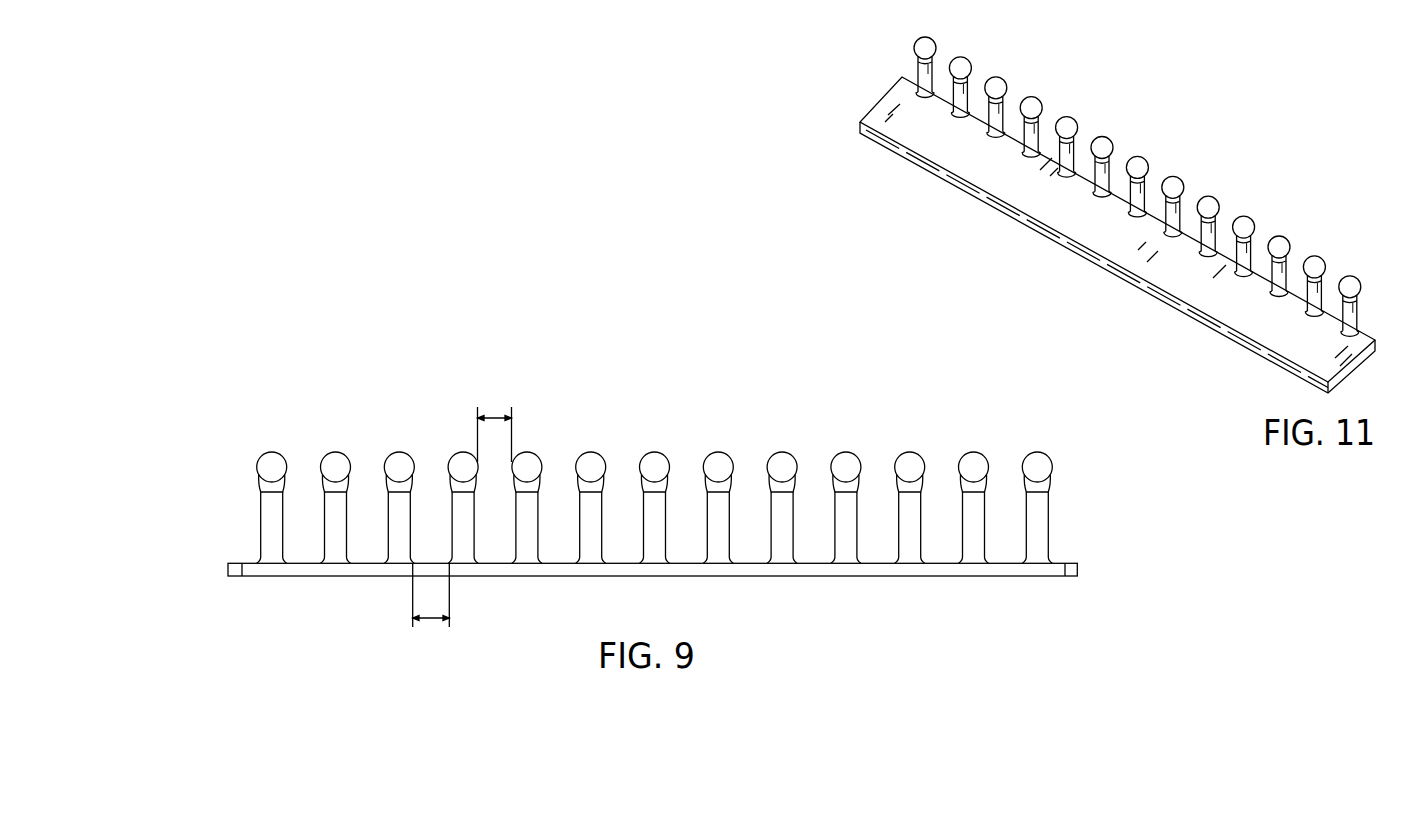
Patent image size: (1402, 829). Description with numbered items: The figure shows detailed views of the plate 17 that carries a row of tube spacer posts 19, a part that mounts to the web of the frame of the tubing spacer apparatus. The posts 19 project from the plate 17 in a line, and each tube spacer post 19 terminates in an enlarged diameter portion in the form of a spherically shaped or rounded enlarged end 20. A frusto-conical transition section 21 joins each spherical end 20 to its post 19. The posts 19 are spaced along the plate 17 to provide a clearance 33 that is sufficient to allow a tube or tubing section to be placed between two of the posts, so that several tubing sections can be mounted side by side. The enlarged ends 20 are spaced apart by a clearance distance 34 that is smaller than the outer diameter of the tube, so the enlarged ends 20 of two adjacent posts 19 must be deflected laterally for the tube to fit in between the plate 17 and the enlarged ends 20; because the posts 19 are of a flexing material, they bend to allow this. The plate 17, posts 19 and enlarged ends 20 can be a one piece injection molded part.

In FIG. 9, the plate 17 is at (913, 568).
In FIG. 11, the plate 17 is at (1192, 287).
In FIG. 9, the tube spacer post 19 is at (268, 530).
In FIG. 9, the spherical end/enlarged diameter portion 20 is at (272, 467).
In FIG. 11, the spherical end/enlarged diameter portion 20 is at (1066, 121).
In FIG. 9, the frusto-conical transition section 21 is at (272, 487).
In FIG. 9, the clearance distance 33 is at (412, 620).
In FIG. 9, the clearance distance 34 is at (513, 411).